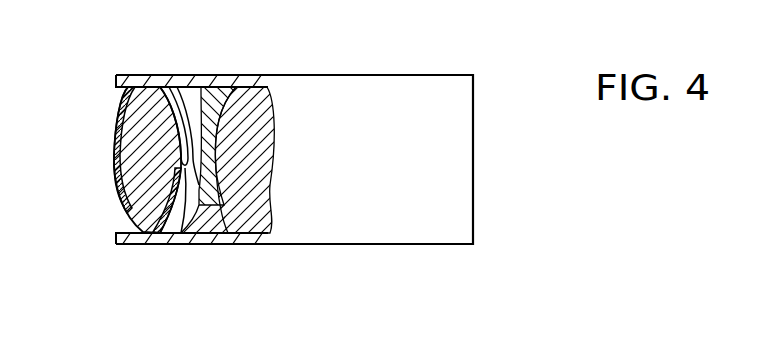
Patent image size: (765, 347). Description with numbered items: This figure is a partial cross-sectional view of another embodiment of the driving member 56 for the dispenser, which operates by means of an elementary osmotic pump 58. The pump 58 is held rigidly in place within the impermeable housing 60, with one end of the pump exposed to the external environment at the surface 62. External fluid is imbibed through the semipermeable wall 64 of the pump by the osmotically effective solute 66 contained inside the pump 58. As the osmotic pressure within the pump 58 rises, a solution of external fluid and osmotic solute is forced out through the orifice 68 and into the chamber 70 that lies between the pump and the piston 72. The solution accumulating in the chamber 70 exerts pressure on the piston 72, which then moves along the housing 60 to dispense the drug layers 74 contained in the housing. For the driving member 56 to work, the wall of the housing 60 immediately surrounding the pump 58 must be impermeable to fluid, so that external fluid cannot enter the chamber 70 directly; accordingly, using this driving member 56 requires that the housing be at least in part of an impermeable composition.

The driving member 56 is at (223, 27).
The elementary osmotic pump 58 is at (124, 200).
The impermeable housing 60 is at (123, 245).
The surface 62 is at (123, 142).
The semipermeable wall 64 is at (125, 112).
The osmotically effective solute 66 is at (130, 208).
The orifice 68 is at (175, 88).
The chamber 70 is at (172, 245).
The piston 72 is at (230, 212).
The drug layers 74 is at (255, 80).